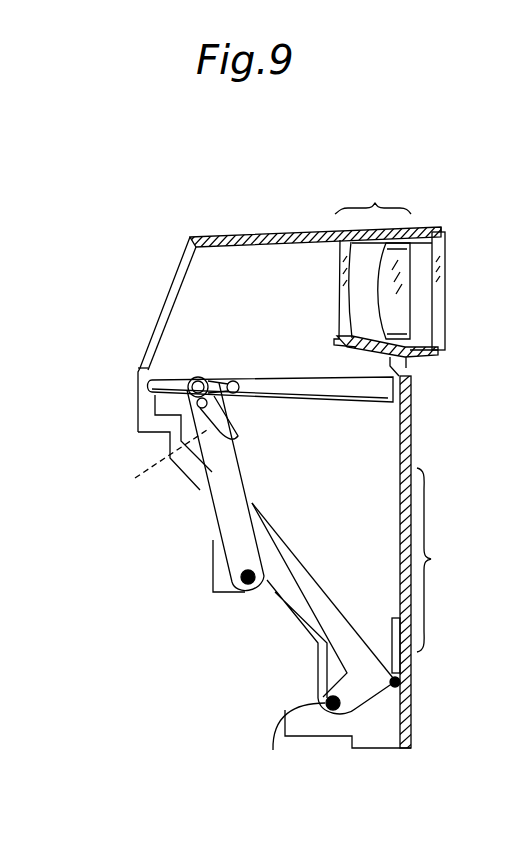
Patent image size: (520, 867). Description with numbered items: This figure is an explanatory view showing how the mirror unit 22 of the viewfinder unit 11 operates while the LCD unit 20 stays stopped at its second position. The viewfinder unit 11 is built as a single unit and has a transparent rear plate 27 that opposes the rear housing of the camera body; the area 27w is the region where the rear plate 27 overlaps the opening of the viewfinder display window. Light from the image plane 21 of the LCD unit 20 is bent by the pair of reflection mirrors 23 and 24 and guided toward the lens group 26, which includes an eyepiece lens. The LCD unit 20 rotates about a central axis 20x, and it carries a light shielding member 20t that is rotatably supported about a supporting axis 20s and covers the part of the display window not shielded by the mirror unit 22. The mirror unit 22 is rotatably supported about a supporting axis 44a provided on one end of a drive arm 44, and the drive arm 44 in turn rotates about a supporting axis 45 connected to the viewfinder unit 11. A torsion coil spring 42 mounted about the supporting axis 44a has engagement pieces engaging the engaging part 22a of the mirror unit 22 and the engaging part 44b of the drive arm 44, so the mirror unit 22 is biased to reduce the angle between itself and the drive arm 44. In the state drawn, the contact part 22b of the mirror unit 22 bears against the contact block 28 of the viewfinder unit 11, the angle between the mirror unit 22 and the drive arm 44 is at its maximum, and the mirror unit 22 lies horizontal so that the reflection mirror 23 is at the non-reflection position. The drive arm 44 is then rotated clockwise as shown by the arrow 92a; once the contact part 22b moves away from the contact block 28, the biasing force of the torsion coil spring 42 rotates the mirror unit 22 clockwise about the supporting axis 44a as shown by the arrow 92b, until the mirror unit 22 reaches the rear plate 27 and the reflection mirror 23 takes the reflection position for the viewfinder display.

The viewfinder unit 11 is at (442, 193).
The lens group 26 is at (373, 191).
The reflection mirror 24 is at (176, 299).
The mirror unit 22 is at (306, 372).
The arrow 92a is at (198, 352).
The supporting axis 44a is at (192, 378).
The torsion coil spring 42 is at (222, 376).
The engaging part 22a is at (238, 380).
The reflection mirror 23 is at (305, 400).
The rear plate 27 is at (412, 419).
The area 27w is at (460, 560).
The contact block 28 is at (172, 432).
The contact part 22b is at (154, 467).
The arrow 92b is at (372, 437).
The engaging part 44b is at (227, 444).
The drive arm 44 is at (230, 533).
The supporting axis 45 is at (248, 582).
The image plane 21 is at (325, 600).
The light shielding member 20t is at (392, 630).
The LCD unit 20 is at (308, 608).
The supporting axis 20s is at (402, 684).
The central axis 20x is at (328, 712).